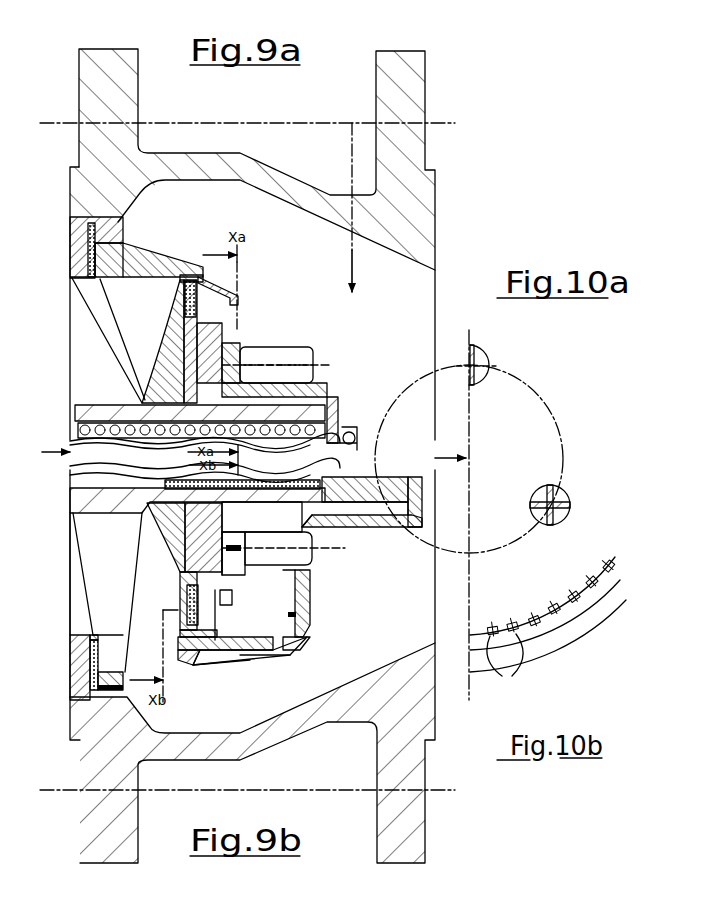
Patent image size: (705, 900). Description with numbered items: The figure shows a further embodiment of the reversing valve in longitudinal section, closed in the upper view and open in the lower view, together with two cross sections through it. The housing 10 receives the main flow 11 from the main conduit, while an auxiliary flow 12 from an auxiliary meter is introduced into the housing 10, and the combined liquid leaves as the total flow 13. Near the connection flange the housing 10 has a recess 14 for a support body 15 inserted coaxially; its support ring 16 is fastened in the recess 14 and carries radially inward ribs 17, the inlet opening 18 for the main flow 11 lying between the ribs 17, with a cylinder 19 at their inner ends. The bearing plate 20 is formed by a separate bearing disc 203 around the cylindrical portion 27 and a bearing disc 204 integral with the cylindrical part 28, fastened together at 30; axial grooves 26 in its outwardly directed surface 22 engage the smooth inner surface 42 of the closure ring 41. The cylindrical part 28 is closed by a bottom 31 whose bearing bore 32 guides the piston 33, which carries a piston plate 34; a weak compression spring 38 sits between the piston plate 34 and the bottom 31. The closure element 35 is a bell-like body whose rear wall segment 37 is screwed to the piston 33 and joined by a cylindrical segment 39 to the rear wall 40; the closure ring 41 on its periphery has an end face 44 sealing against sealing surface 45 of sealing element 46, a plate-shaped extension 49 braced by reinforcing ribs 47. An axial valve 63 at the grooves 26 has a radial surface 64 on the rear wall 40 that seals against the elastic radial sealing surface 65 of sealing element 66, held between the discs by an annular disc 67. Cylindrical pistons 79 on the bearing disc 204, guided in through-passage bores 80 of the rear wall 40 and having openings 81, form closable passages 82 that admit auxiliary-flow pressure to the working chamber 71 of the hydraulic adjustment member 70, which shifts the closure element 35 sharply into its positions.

In FIG. 9A, the housing 10 is at (205, 162).
In FIG. 9A, the main flow 11 is at (48, 438).
In FIG. 9A, the auxiliary flow 12 is at (345, 158).
In FIG. 9A, the total flow 13 is at (449, 455).
In FIG. 9B, the recess or bore 14 is at (72, 690).
In FIG. 9B, the support body 15 is at (98, 509).
In FIG. 9B, the support ring 16 is at (76, 662).
In FIG. 9B, the ribs 17 is at (85, 566).
In FIG. 9B, the inlet opening 18 is at (80, 542).
In FIG. 9A, the cylinder 19 is at (80, 412).
In FIG. 9A, the bearing plate 20 is at (178, 350).
In FIG. 9B, the bearing plate 20 is at (178, 545).
In FIG. 10B, the outwardly directed surface 22 is at (602, 606).
In FIG. 9A, the grooves 26 is at (180, 285).
In FIG. 10B, the grooves 26 is at (513, 672).
In FIG. 9B, the cylindrical portion 27 is at (80, 496).
In FIG. 9B, the cylindrical part 28 is at (253, 543).
In FIG. 9B, the fastening location 30 is at (262, 517).
In FIG. 9B, the bottom 31 is at (328, 492).
In FIG. 9B, the bearing bore 32 is at (362, 492).
In FIG. 9A, the piston 33 is at (134, 453).
In FIG. 9B, the piston 33 is at (155, 474).
In FIG. 9A, the piston plate 34 is at (82, 424).
In FIG. 9B, the closure element 35 is at (302, 650).
In FIG. 9A, the rear wall segment 37 is at (340, 422).
In FIG. 9A, the helical compression spring 38 is at (315, 392).
In FIG. 9B, the cylindrical segment 39 is at (395, 528).
In FIG. 9B, the rear wall 40 is at (300, 595).
In FIG. 10B, the rear wall 40 is at (520, 591).
In FIG. 9B, the closure ring 41 is at (252, 658).
In FIG. 9B, the inwardly directed cylindrical surface 42 is at (292, 647).
In FIG. 10B, the inwardly directed cylindrical surface 42 is at (560, 610).
In FIG. 9B, the end face 44 is at (180, 641).
In FIG. 10B, the end face 44 is at (578, 620).
In FIG. 9B, the sealing surface 45 is at (108, 640).
In FIG. 9B, the sealing element 46 is at (80, 648).
In FIG. 9A, the reinforcing ribs 47 is at (144, 264).
In FIG. 9B, the plate-shaped extension 49 is at (193, 665).
In FIG. 10B, the plate-shaped extension 49 is at (552, 645).
In FIG. 9A, the axial valve 63 is at (230, 286).
In FIG. 9B, the radial surface 64 is at (305, 630).
In FIG. 9B, the radial sealing surface 65 is at (200, 632).
In FIG. 9A, the sealing element 66 is at (184, 308).
In FIG. 9B, the sealing element 66 is at (200, 608).
In FIG. 9B, the annular disc 67 is at (233, 597).
In FIG. 9B, the hydraulic adjustment member 70 is at (300, 614).
In FIG. 9B, the working chamber 71 is at (296, 578).
In FIG. 9A, the cylindrical pistons 79 is at (305, 352).
In FIG. 9B, the cylindrical pistons 79 is at (305, 548).
In FIG. 9B, the through-passage bores 80 is at (322, 522).
In FIG. 9A, the openings 81 is at (234, 347).
In FIG. 9B, the openings 81 is at (240, 568).
In FIG. 10A, the openings 81 is at (482, 364).
In FIG. 9A, the closable passages 82 is at (255, 345).
In FIG. 9B, the closable passages 82 is at (233, 553).
In FIG. 10A, the closable passages 82 is at (483, 346).
In FIG. 9B, the bearing disc 203 is at (182, 575).
In FIG. 9B, the bearing disc 204 is at (246, 614).